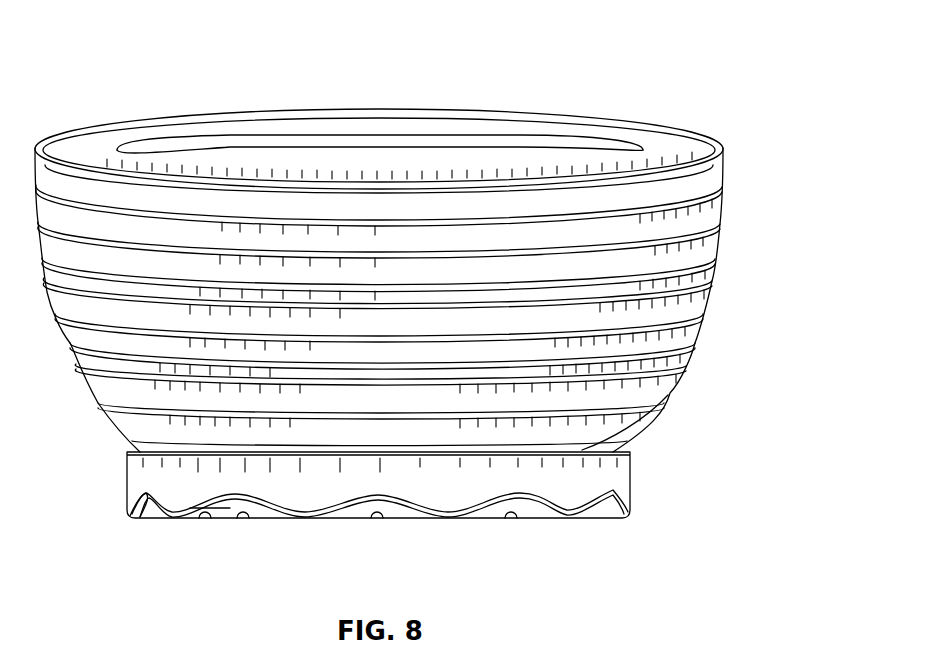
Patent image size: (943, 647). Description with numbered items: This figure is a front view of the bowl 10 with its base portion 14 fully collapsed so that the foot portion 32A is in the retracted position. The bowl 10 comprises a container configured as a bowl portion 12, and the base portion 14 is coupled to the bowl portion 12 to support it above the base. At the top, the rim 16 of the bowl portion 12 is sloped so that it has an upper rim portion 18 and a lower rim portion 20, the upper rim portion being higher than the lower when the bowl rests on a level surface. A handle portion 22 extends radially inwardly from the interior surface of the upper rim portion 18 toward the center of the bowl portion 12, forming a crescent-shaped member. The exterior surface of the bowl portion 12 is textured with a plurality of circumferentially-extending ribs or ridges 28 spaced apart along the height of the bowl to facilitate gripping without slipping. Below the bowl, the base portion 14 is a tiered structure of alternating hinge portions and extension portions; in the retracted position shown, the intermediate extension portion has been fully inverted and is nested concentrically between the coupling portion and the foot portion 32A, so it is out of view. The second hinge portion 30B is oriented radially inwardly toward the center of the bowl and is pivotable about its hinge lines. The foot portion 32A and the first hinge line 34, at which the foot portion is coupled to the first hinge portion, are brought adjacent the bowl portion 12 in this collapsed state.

The bowl 10 is at (568, 36).
The bowl portion 12 is at (728, 258).
The base portion 14 is at (665, 455).
The rim 16 is at (664, 132).
The upper rim portion 18 is at (349, 108).
The lower rim portion 20 is at (263, 185).
The handle portion 22 is at (440, 135).
The ribs or ridges 28 is at (724, 223).
The second hinge portion 30B is at (234, 513).
The foot portion 32A is at (142, 483).
The first hinge line 34 is at (672, 393).